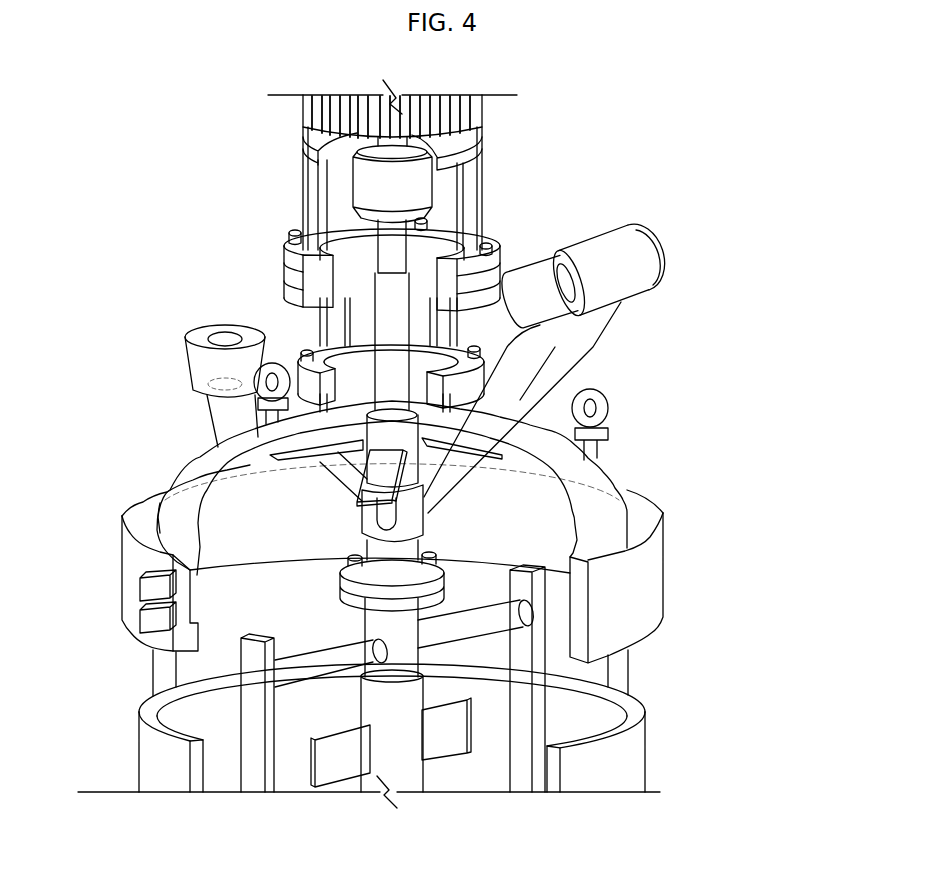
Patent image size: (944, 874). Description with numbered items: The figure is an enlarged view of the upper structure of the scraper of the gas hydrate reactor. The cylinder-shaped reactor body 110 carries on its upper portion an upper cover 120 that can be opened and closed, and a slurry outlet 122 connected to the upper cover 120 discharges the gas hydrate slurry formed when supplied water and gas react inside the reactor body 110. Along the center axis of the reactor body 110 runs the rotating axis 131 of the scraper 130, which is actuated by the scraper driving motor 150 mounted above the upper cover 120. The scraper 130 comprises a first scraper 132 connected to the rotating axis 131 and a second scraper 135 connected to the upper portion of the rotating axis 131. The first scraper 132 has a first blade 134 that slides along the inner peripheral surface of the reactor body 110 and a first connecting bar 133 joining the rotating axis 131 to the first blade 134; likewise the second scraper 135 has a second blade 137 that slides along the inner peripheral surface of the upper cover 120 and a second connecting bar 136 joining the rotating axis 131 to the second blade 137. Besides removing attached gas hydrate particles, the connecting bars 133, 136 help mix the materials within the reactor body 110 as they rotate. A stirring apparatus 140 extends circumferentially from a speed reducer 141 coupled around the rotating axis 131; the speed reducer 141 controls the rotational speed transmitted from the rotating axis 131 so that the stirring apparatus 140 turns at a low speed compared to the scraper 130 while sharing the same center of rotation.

The reactor body 110 is at (148, 757).
The upper cover 120 is at (203, 463).
The slurry outlet 122 is at (590, 248).
The scraper 130 is at (813, 430).
The rotating axis 131 is at (547, 673).
The first scraper 132 is at (742, 569).
The first connecting bar 133 is at (473, 607).
The first blade 134 is at (403, 637).
The second scraper 135 is at (740, 428).
The second connecting bar 136 is at (443, 482).
The second blade 137 is at (600, 418).
The stirring apparatus 140 is at (447, 747).
The speed reducer 141 is at (373, 699).
The scraper driving motor 150 is at (460, 110).